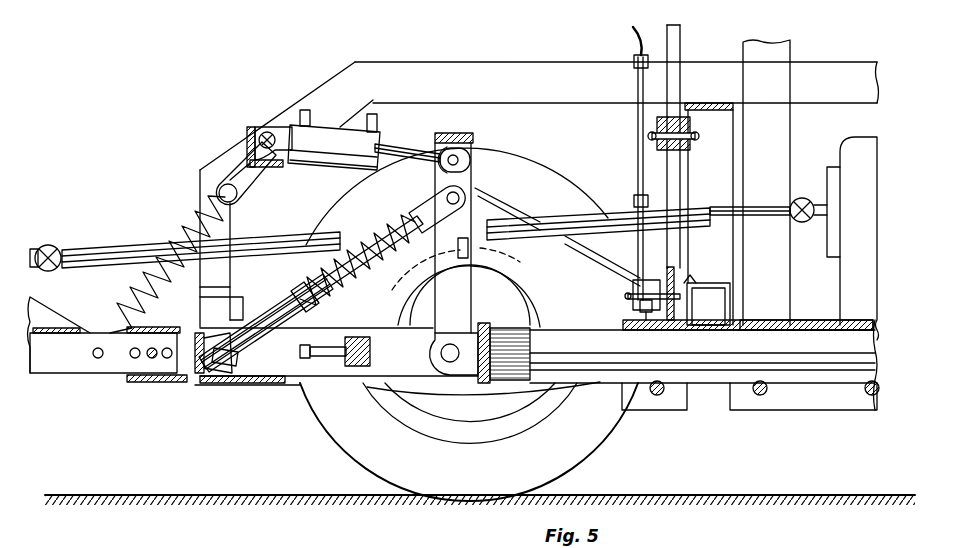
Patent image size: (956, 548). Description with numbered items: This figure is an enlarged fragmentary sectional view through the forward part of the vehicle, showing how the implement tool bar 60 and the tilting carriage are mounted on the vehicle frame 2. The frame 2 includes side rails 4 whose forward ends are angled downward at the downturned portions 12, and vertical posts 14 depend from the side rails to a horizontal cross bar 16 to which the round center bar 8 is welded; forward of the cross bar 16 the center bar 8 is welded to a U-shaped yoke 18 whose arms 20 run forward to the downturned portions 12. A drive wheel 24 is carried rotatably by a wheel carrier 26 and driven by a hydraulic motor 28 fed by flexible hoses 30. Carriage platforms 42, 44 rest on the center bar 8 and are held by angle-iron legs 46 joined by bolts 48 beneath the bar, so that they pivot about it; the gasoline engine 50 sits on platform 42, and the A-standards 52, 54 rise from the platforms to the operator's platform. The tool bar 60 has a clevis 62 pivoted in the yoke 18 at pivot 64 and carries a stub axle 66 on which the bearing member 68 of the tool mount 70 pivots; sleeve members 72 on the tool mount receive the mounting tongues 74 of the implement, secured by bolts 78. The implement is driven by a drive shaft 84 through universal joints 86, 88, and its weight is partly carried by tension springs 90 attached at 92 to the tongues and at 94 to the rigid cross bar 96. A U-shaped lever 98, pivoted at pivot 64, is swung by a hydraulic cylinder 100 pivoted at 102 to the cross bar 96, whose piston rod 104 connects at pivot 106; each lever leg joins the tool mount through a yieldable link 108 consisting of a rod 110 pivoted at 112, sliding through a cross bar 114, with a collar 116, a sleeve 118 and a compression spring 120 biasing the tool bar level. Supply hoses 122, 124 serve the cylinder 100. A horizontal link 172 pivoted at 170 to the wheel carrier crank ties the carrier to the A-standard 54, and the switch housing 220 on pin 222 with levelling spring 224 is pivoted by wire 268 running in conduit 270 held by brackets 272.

The vehicle frame 2 is at (458, 62).
The side rails 4 is at (497, 62).
The center bar 8 is at (710, 380).
The downturned forward end portions 12 is at (224, 220).
The vertical posts 14 is at (722, 137).
The horizontal cross bar 16 is at (703, 286).
The U-shaped yoke 18 is at (470, 295).
The yoke arms 20 is at (388, 328).
The drive wheel 24 is at (578, 452).
The wheel carrier 26 is at (520, 206).
The hydraulic motor 28 is at (520, 292).
The flexible hoses 30 is at (490, 250).
The carriage platform 42 is at (806, 320).
The carriage platform 44 is at (627, 320).
The vertical parallel legs 46 is at (672, 410).
The bolts 48 is at (655, 396).
The gasoline engine 50 is at (835, 281).
The upstanding standard 52 is at (790, 50).
The A-standard 54 is at (680, 38).
The tool bar 60 is at (283, 377).
The U-shaped clevis 62 is at (378, 385).
The pivot 64 is at (441, 353).
The stub axle 66 is at (330, 372).
The bearing member 68 is at (352, 372).
The U-shaped tool mount 70 is at (298, 378).
The sleeve member 72 is at (186, 382).
The mounting tongue 74 is at (44, 374).
The bolt 78 is at (150, 358).
The drive shaft 84 is at (120, 248).
The universal joint 86 is at (48, 245).
The universal joint 88 is at (805, 198).
The tension springs 90 is at (150, 296).
The spring attachment 92 is at (96, 358).
The spring attachment 94 is at (219, 193).
The rigid cross bar 96 is at (247, 135).
The U-shaped lever 98 is at (455, 133).
The hydraulic cylinder 100 is at (322, 165).
The cylinder pivot 102 is at (267, 132).
The piston rod 104 is at (404, 148).
The piston rod pivot 106 is at (468, 160).
The yieldable link 108 is at (316, 310).
The rod 110 is at (395, 255).
The rod pivot 112 is at (446, 196).
The cross bar 114 is at (233, 376).
The collar 116 is at (210, 378).
The sleeve 118 is at (280, 305).
The compression spring 120 is at (416, 247).
The hydraulic supply hose 122 is at (303, 110).
The hydraulic supply hose 124 is at (370, 118).
The crank pivot 170 is at (652, 136).
The horizontal link 172 is at (657, 128).
The switch housing 220 is at (640, 282).
The pin 222 is at (636, 296).
The levelling spring 224 is at (640, 310).
The wire 268 is at (678, 275).
The flexible conduit 270 is at (638, 157).
The brackets 272 is at (634, 58).